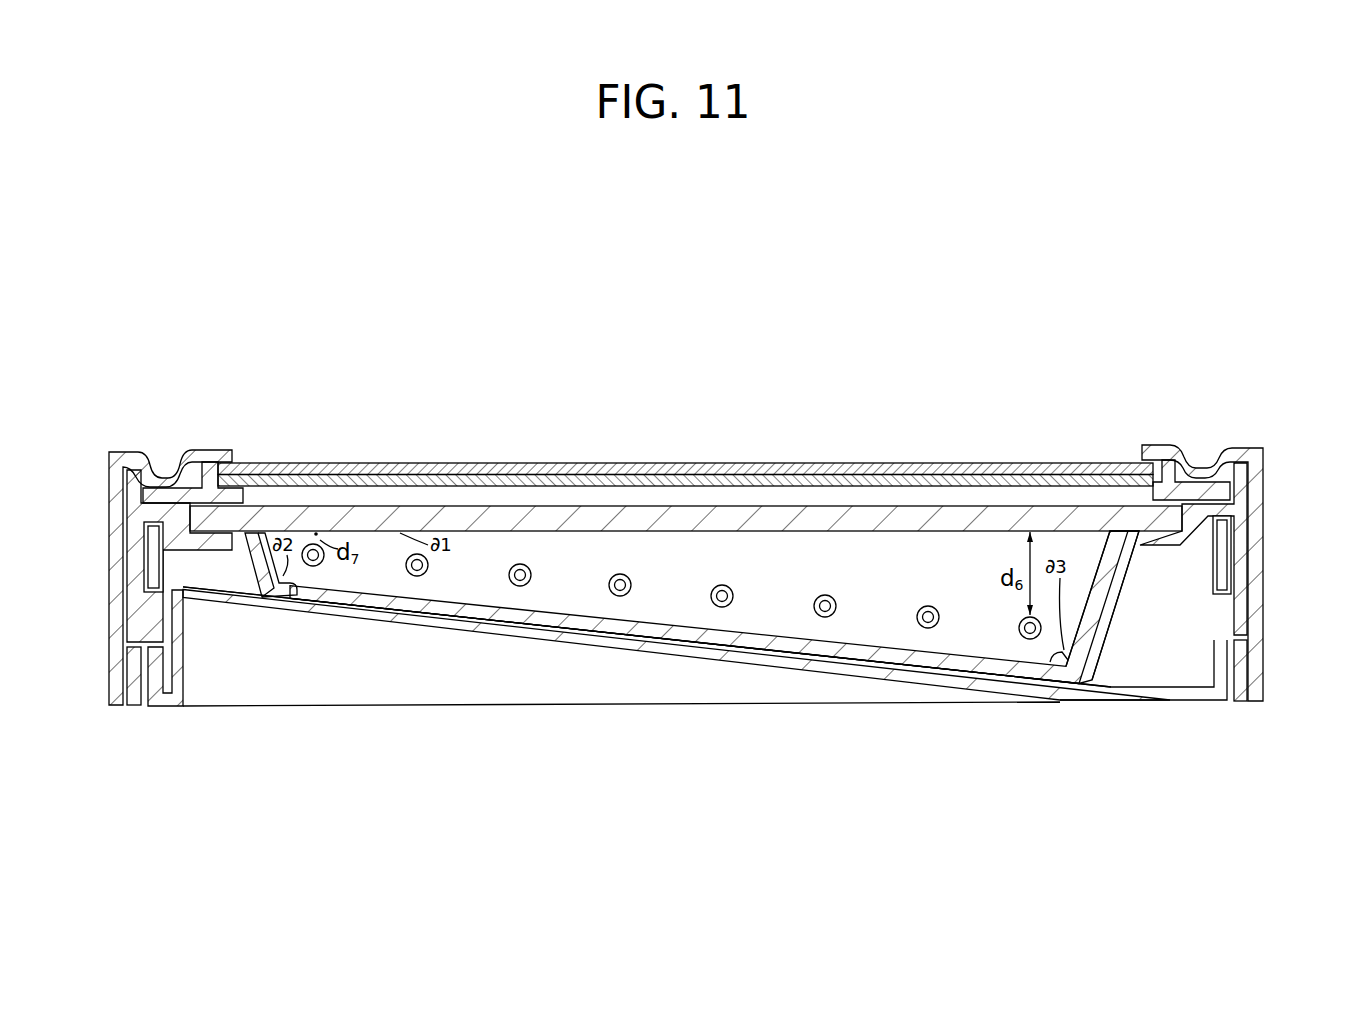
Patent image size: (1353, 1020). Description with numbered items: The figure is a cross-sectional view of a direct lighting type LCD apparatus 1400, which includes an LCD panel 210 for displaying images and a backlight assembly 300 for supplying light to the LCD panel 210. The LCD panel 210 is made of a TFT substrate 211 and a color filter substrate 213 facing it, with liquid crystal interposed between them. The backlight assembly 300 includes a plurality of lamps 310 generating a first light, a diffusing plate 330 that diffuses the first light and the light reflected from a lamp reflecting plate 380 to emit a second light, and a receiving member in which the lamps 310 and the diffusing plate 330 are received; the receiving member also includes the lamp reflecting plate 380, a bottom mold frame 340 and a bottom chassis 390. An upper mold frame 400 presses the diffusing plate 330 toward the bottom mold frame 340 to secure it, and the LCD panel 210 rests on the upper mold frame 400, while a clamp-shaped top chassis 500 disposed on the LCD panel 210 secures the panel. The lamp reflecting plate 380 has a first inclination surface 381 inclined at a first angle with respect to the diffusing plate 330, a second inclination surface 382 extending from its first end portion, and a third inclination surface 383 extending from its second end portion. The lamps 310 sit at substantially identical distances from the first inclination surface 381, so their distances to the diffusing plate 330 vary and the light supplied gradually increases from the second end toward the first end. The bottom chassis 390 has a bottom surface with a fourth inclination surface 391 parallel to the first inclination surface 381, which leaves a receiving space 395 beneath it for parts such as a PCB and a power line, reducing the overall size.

The direct lighting LCD apparatus 1400 is at (660, 272).
The LCD panel 210 is at (685, 412).
The TFT substrate 211 is at (608, 463).
The color filter substrate 213 is at (592, 379).
The top chassis 500 is at (1244, 452).
The upper mold frame 400 is at (1225, 489).
The bottom mold frame 340 is at (1227, 507).
The diffusing plate 330 is at (887, 514).
The backlight assembly 300 is at (1140, 755).
The lamps 310 is at (937, 627).
The lamp reflecting plate 380 is at (1045, 670).
The first inclination surface 381 is at (762, 642).
The second inclination surface 382 is at (250, 567).
The third inclination surface 383 is at (1112, 593).
The bottom chassis 390 is at (1131, 693).
The fourth inclination surface 391 is at (752, 655).
The receiving space 395 is at (565, 660).